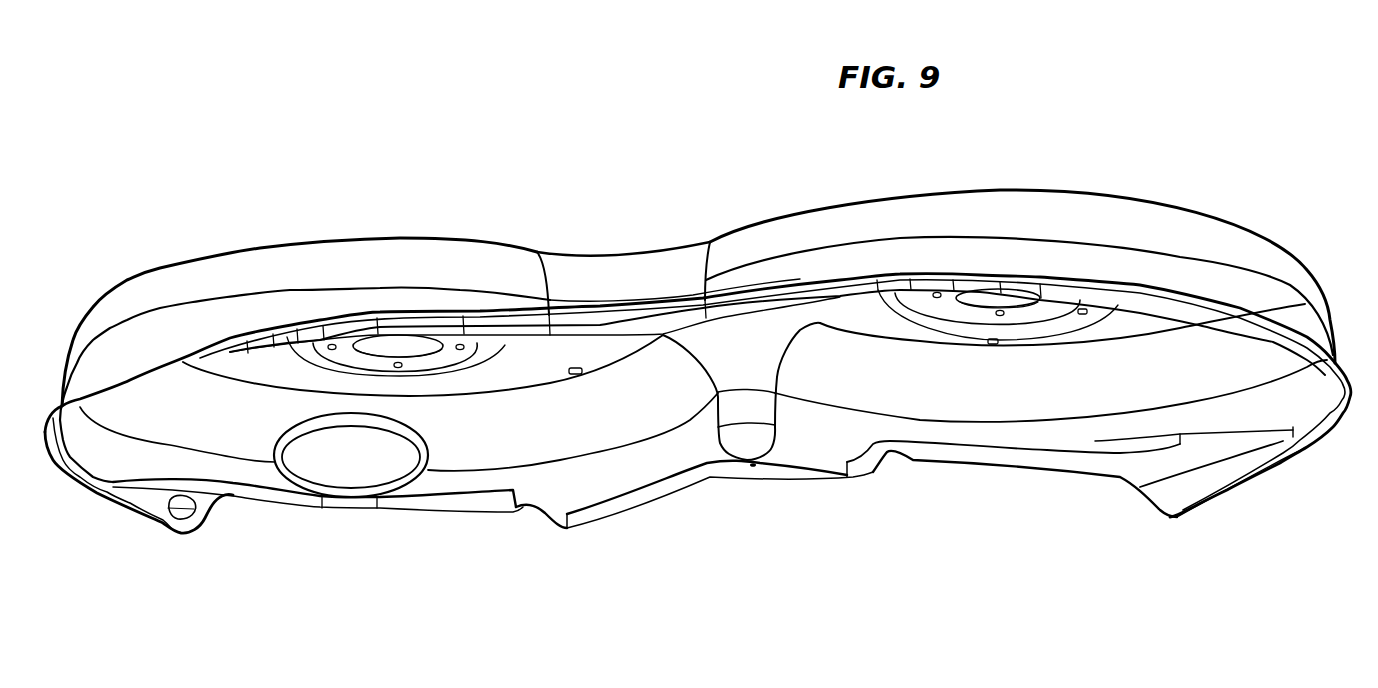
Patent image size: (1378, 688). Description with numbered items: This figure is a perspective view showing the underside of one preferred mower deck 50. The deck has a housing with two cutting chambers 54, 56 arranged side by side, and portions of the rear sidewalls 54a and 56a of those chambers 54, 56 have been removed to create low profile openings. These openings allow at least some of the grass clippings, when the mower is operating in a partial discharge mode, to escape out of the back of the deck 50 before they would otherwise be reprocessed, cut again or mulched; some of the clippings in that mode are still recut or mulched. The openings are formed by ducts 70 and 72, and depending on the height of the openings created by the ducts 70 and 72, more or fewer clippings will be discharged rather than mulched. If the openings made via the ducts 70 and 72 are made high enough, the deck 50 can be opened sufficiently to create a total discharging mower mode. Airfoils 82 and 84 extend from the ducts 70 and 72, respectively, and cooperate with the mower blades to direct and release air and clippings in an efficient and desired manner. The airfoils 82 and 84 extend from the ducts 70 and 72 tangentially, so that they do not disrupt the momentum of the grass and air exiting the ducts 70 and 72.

The mower deck 50 is at (620, 212).
The chamber 54 is at (1090, 210).
The chamber 56 is at (378, 262).
The rear sidewall 54a is at (1008, 398).
The rear sidewall 56a is at (519, 447).
The duct 70 is at (1068, 470).
The duct 72 is at (343, 500).
The airfoil 82 is at (1165, 498).
The airfoil 84 is at (140, 500).